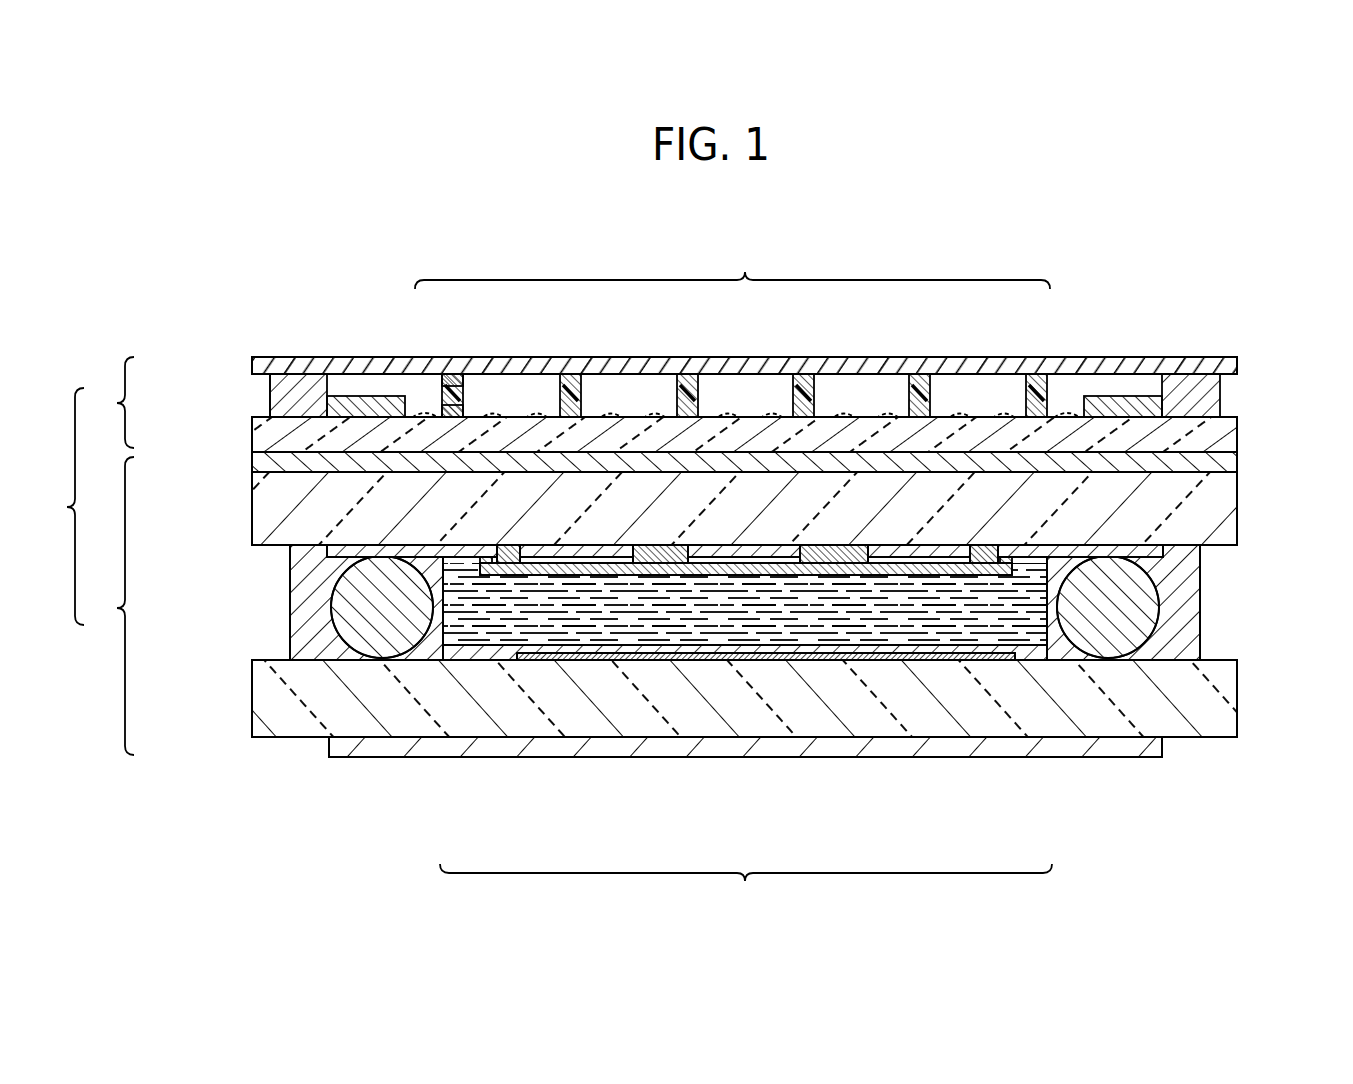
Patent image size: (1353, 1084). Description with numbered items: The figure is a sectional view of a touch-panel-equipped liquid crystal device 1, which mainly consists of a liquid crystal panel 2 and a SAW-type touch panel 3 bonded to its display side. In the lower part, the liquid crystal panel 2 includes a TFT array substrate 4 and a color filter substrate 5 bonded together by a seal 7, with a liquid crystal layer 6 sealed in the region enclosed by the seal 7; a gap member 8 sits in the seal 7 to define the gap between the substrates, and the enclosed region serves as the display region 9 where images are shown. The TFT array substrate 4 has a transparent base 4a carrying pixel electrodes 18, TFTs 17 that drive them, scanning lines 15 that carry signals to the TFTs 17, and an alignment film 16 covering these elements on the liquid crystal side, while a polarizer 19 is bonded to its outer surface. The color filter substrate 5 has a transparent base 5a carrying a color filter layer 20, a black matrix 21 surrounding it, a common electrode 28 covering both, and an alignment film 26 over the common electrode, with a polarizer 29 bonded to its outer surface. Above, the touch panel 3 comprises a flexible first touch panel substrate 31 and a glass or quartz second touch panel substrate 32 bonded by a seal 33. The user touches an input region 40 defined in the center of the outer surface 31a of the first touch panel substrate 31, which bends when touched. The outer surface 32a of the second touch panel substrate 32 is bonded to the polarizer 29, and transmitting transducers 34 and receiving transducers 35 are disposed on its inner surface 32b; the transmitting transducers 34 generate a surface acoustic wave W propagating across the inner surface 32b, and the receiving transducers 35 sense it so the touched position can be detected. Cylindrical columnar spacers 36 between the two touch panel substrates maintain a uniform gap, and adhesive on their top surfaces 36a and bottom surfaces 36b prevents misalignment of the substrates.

The liquid crystal device 1 is at (67, 506).
The liquid crystal panel 2 is at (116, 606).
The touch panel 3 is at (116, 402).
The TFT array substrate 4 is at (1247, 697).
The base 4a is at (282, 726).
The color filter substrate 5 is at (1247, 513).
The base 5a is at (265, 510).
The liquid crystal layer 6 is at (490, 640).
The seal 7 is at (298, 571).
The gap member 8 is at (352, 606).
The display region 9 is at (746, 888).
The scanning lines 15 is at (688, 660).
The alignment film 16 is at (462, 652).
The TFTs 17 is at (636, 660).
The pixel electrodes 18 is at (568, 660).
The polarizer 19 is at (770, 746).
The color filter layer 20 is at (916, 563).
The black matrix 21 is at (978, 575).
The alignment film 26 is at (1028, 557).
The common electrode 28 is at (857, 578).
The polarizer 29 is at (1240, 460).
The first touch panel substrate 31 is at (798, 357).
The outer surface 31a is at (1205, 357).
The second touch panel substrate 32 is at (268, 438).
The outer surface 32a is at (268, 460).
The inner surface 32b is at (273, 408).
The seal 33 is at (272, 389).
The transmitting transducers 34 is at (369, 396).
The receiving transducers 35 is at (1129, 400).
The columnar spacers 36 is at (573, 378).
The top surfaces 36a is at (452, 378).
The bottom surfaces 36b is at (479, 372).
The input region 40 is at (732, 267).
The surface acoustic wave W is at (1080, 415).